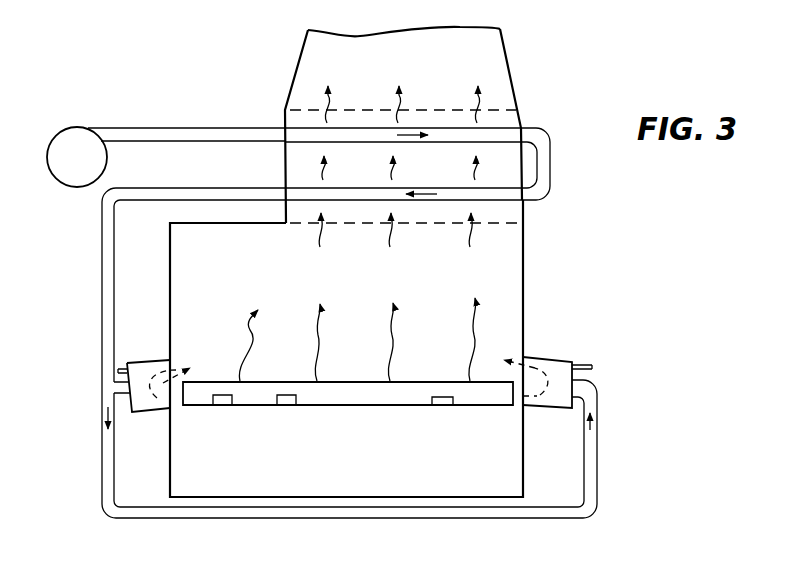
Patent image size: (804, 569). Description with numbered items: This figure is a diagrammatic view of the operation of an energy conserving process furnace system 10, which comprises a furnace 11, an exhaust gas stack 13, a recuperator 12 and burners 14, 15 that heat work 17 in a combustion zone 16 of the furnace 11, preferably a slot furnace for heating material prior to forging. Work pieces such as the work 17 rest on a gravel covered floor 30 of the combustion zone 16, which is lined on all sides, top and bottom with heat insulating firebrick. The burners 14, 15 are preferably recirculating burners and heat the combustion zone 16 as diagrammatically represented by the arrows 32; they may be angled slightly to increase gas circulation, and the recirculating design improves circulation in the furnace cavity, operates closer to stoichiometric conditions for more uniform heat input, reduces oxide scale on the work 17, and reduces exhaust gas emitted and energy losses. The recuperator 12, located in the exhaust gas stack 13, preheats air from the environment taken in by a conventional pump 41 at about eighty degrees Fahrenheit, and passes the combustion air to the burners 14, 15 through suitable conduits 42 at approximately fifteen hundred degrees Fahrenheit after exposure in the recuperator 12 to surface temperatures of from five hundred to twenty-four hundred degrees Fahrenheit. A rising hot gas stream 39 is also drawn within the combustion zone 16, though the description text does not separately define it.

The energy conserving process furnace system 10 is at (540, 74).
The furnace 11 is at (540, 257).
The recuperator 12 is at (566, 122).
The exhaust gas stack 13 is at (498, 48).
The burner 14 is at (573, 362).
The burner 15 is at (133, 413).
The combustion zone 16 is at (436, 343).
The work 17 is at (452, 398).
The gravel covered floor 30 is at (433, 418).
The arrows 32 is at (545, 370).
The rising hot gas stream 39 is at (315, 340).
The pump 41 is at (78, 128).
The conduits 42 is at (102, 310).